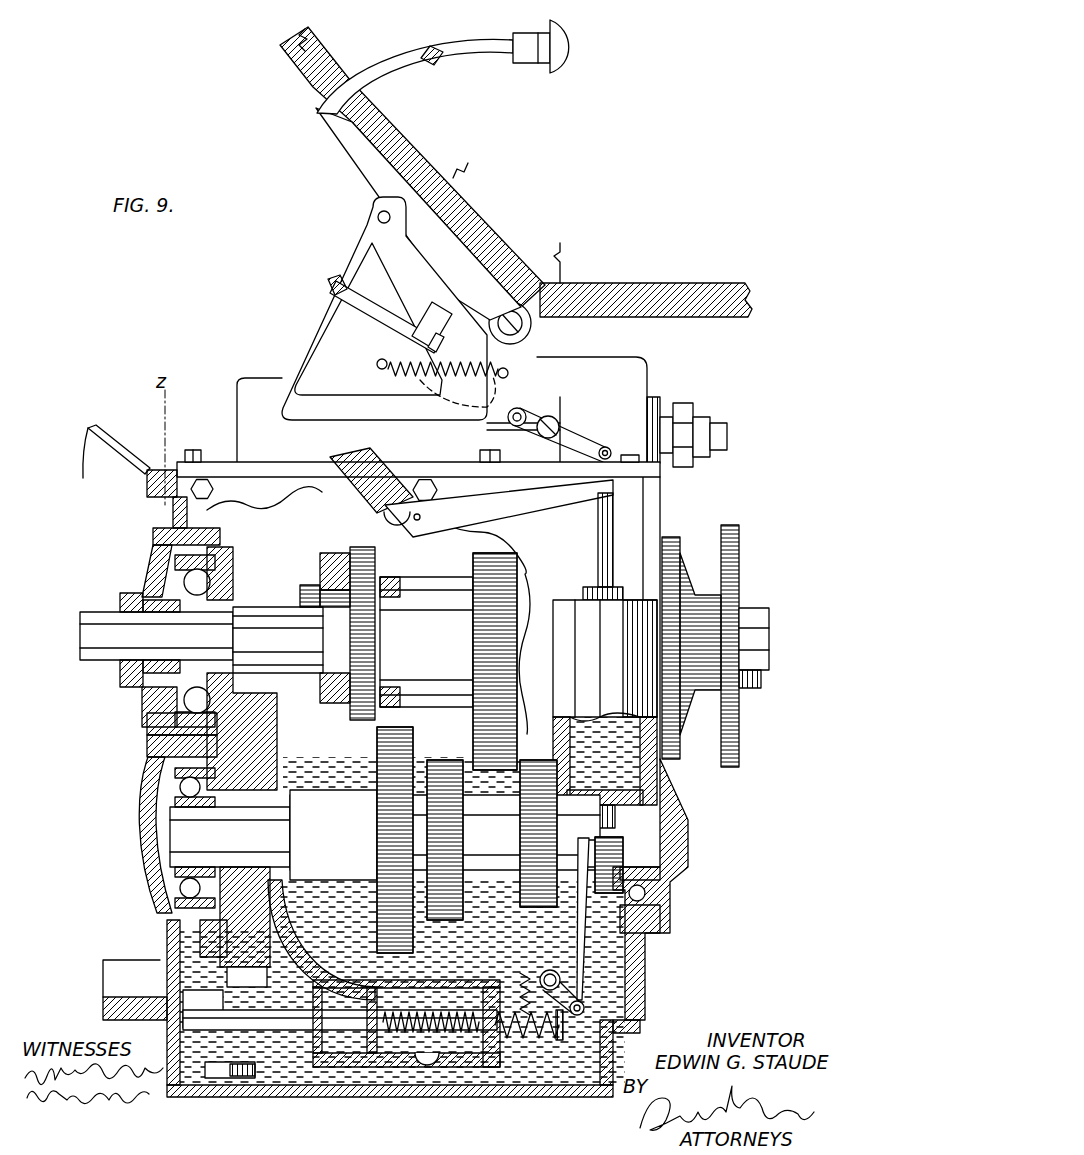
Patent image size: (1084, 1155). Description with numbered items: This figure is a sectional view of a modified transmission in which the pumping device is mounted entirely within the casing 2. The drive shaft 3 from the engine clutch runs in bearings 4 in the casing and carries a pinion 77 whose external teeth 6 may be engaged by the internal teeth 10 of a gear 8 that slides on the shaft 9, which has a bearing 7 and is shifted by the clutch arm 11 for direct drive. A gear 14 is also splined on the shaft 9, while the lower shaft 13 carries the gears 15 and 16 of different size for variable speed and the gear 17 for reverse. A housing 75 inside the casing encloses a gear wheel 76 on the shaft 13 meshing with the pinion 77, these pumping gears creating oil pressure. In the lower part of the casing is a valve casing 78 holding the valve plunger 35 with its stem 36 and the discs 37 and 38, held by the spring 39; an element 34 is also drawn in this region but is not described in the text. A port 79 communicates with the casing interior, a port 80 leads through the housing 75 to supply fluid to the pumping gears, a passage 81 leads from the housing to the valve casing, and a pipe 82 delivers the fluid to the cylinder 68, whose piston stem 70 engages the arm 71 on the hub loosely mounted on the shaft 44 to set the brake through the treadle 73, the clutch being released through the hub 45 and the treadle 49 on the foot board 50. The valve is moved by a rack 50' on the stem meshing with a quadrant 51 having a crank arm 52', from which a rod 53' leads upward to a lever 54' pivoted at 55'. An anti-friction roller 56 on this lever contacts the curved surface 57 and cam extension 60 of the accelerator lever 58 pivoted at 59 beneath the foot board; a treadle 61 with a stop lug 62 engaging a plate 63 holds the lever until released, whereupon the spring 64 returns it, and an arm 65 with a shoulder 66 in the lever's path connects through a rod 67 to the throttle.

The casing 2 is at (640, 522).
The drive shaft 3 is at (110, 617).
The bearings 4 is at (190, 572).
The external teeth 6 is at (303, 597).
The bearing 7 is at (130, 598).
The gear 8 is at (343, 553).
The shaft 9 is at (210, 615).
The internal teeth 10 is at (323, 597).
The clutch arm 11 is at (405, 572).
The shaft 13 is at (193, 837).
The gear 14 is at (500, 590).
The gear 15 is at (380, 748).
The gear 16 is at (430, 770).
The gear 17 is at (520, 800).
The notch 34 is at (425, 1055).
The valve plunger 35 is at (163, 977).
The stem 36 is at (223, 973).
The disc 37 is at (317, 1057).
The disc 38 is at (372, 1057).
The spring 39 is at (458, 1042).
The shaft 44 is at (430, 540).
The hub 45 is at (417, 517).
The treadle 49 is at (363, 497).
The foot board 50 is at (430, 185).
The rack 50' is at (512, 1070).
The quadrant 51 is at (540, 1037).
The crank arm 52' is at (648, 977).
The rod 53' is at (666, 919).
The lever 54' is at (624, 406).
The pivot 55' is at (603, 387).
The anti-friction roller 56 is at (537, 392).
The curved surface 57 is at (480, 413).
The lever 58 is at (363, 163).
The pivot 59 is at (563, 281).
The cam extension 60 is at (510, 423).
The treadle 61 is at (472, 57).
The stop lug 62 is at (440, 67).
The plate 63 is at (370, 133).
The spring 64 is at (390, 350).
The arm 65 is at (433, 300).
The shoulder 66 is at (450, 307).
The rod 67 is at (420, 322).
The cylinder 68 is at (605, 702).
The stem 70 is at (613, 500).
The arm 71 is at (500, 517).
The treadle 73 is at (355, 465).
The housing 75 is at (150, 723).
The gear wheel 76 is at (162, 747).
The pinion 77 is at (160, 538).
The valve casing 78 is at (407, 1067).
The port 79 is at (307, 1053).
The port 80 is at (310, 957).
The passage 81 is at (177, 910).
The pipe 82 is at (613, 822).